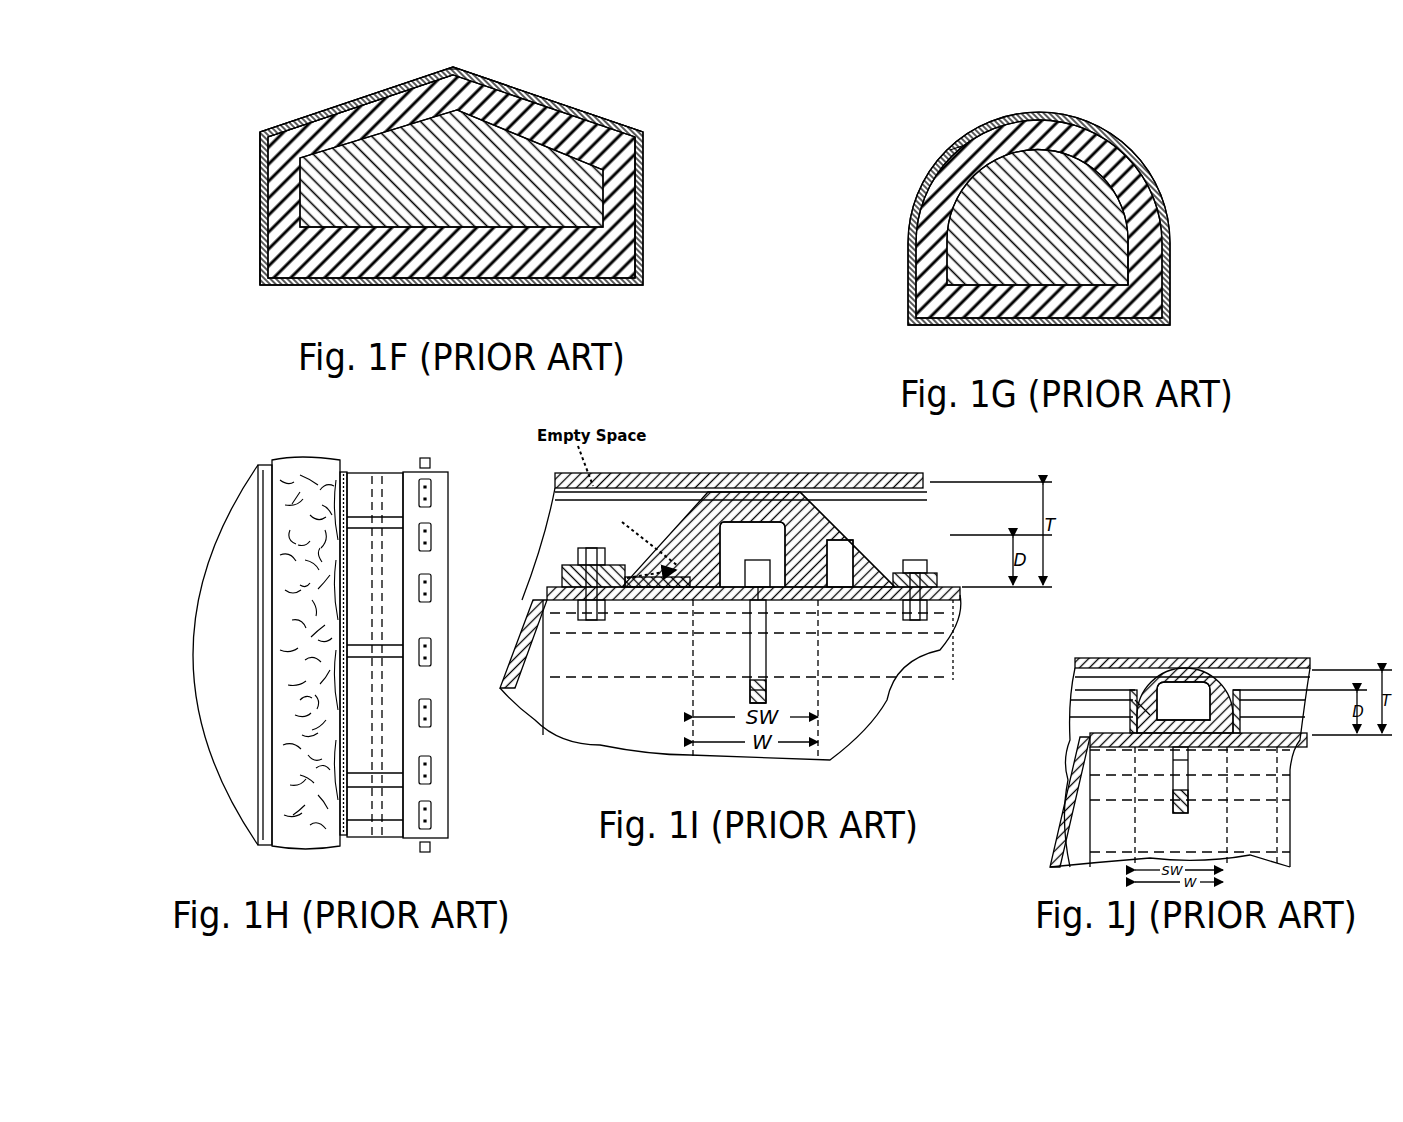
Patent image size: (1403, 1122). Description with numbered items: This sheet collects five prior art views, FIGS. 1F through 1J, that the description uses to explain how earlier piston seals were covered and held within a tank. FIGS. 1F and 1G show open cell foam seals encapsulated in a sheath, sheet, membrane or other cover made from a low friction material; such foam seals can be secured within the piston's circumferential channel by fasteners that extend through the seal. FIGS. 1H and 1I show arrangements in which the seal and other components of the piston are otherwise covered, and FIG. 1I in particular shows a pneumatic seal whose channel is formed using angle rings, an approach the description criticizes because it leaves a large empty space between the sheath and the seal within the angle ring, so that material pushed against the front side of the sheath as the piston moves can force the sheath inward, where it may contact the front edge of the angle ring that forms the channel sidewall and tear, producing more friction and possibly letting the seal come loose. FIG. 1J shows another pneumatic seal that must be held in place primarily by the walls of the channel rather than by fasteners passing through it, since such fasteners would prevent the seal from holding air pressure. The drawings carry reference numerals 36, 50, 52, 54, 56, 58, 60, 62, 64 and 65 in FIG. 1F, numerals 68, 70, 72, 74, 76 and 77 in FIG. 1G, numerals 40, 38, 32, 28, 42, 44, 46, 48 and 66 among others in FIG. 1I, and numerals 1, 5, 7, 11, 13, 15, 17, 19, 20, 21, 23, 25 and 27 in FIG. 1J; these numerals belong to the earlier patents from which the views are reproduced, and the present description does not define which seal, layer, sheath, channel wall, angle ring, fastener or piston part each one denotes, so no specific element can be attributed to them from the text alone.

In FIG. 1F, the fender body 36 is at (604, 100).
In FIG. 1I, the fender body 36 is at (830, 490).
In FIG. 1F, the core 50 is at (585, 278).
In FIG. 1I, the core 50 is at (754, 554).
In FIG. 1F, the outer skin 52 is at (268, 202).
In FIG. 1I, the outer skin 52 is at (785, 605).
In FIG. 1F, the resilient layer 54 is at (643, 198).
In FIG. 1I, the resilient layer 54 is at (562, 572).
In FIG. 1F, the left sloped top wall 56 is at (360, 98).
In FIG. 1I, the left sloped top wall 56 is at (940, 582).
In FIG. 1F, the right sloped top wall 58 is at (567, 120).
In FIG. 1I, the right sloped top wall 58 is at (555, 560).
In FIG. 1F, the apex 60 is at (452, 65).
In FIG. 1I, the apex 60 is at (930, 570).
In FIG. 1F, the right side wall 62 is at (637, 180).
In FIG. 1I, the right side wall 62 is at (560, 582).
In FIG. 1F, the left side wall 64 is at (260, 146).
In FIG. 1I, the left side wall 64 is at (638, 541).
In FIG. 1F, the inner layer boundary 65 is at (362, 118).
In FIG. 1G, the D-shaped fender body 68 is at (1110, 113).
In FIG. 1I, the D-shaped fender body 68 is at (905, 552).
In FIG. 1G, the core 70 is at (1123, 313).
In FIG. 1I, the core 70 is at (900, 620).
In FIG. 1G, the resilient layer 72 is at (1125, 144).
In FIG. 1G, the side wall 74 is at (1160, 213).
In FIG. 1I, the side wall 74 is at (775, 670).
In FIG. 1G, the inner layer boundary 76 is at (958, 143).
In FIG. 1G, the outer skin 77 is at (935, 158).
In FIG. 1I, the top plate 40 is at (660, 490).
In FIG. 1I, the upper sheet 38 is at (770, 490).
In FIG. 1I, the frame structure 32 is at (855, 600).
In FIG. 1I, the deck plate 28 is at (868, 530).
In FIG. 1I, the wedge block 42 is at (700, 505).
In FIG. 1I, the center bolt 44 is at (748, 605).
In FIG. 1I, the gap 46 is at (645, 640).
In FIG. 1I, the pocket 48 is at (749, 554).
In FIG. 1I, the left nut 66 is at (585, 622).
In FIG. 1J, the assembly 1 is at (1280, 658).
In FIG. 1J, the frame 5 is at (1190, 807).
In FIG. 1J, the side wall 7 is at (1052, 843).
In FIG. 1J, the top sheet 11 is at (1223, 662).
In FIG. 1J, the top plate 13 is at (1212, 660).
In FIG. 1J, the rail block 15 is at (1130, 690).
In FIG. 1J, the deck plate 17 is at (1290, 733).
In FIG. 1J, the edge wall 19 is at (1130, 675).
In FIG. 1J, the bolt head 20 is at (1182, 665).
In FIG. 1J, the bolt shank 21 is at (1200, 750).
In FIG. 1J, the side plate 23 is at (1148, 740).
In FIG. 1J, the side wall 25 is at (1088, 700).
In FIG. 1J, the threaded end 27 is at (1190, 800).